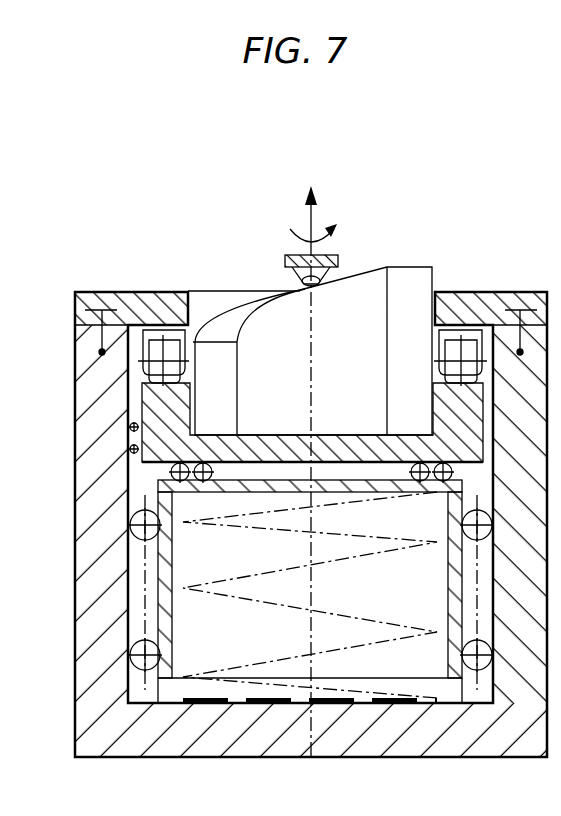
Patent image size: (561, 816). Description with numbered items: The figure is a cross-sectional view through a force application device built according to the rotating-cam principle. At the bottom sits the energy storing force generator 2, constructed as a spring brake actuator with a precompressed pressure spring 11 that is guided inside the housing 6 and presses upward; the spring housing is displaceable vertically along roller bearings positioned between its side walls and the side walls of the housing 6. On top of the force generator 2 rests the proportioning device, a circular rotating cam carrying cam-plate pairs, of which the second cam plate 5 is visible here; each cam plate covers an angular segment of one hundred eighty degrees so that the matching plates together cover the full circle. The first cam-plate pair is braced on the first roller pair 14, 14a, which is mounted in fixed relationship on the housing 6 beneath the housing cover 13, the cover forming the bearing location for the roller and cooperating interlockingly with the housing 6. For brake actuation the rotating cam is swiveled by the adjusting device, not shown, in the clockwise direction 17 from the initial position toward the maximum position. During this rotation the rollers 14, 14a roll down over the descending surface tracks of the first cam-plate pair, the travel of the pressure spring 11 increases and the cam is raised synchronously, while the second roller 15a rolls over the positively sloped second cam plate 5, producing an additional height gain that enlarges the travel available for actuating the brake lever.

The force generator 2 is at (148, 607).
The second cam plate 5 is at (235, 323).
The housing 6 is at (86, 714).
The pressure spring 11 is at (345, 560).
The housing cover 13 is at (475, 296).
The first roller 14 is at (152, 370).
The first roller 14a is at (452, 350).
The second roller 15a is at (303, 287).
The clockwise direction 17 is at (336, 232).